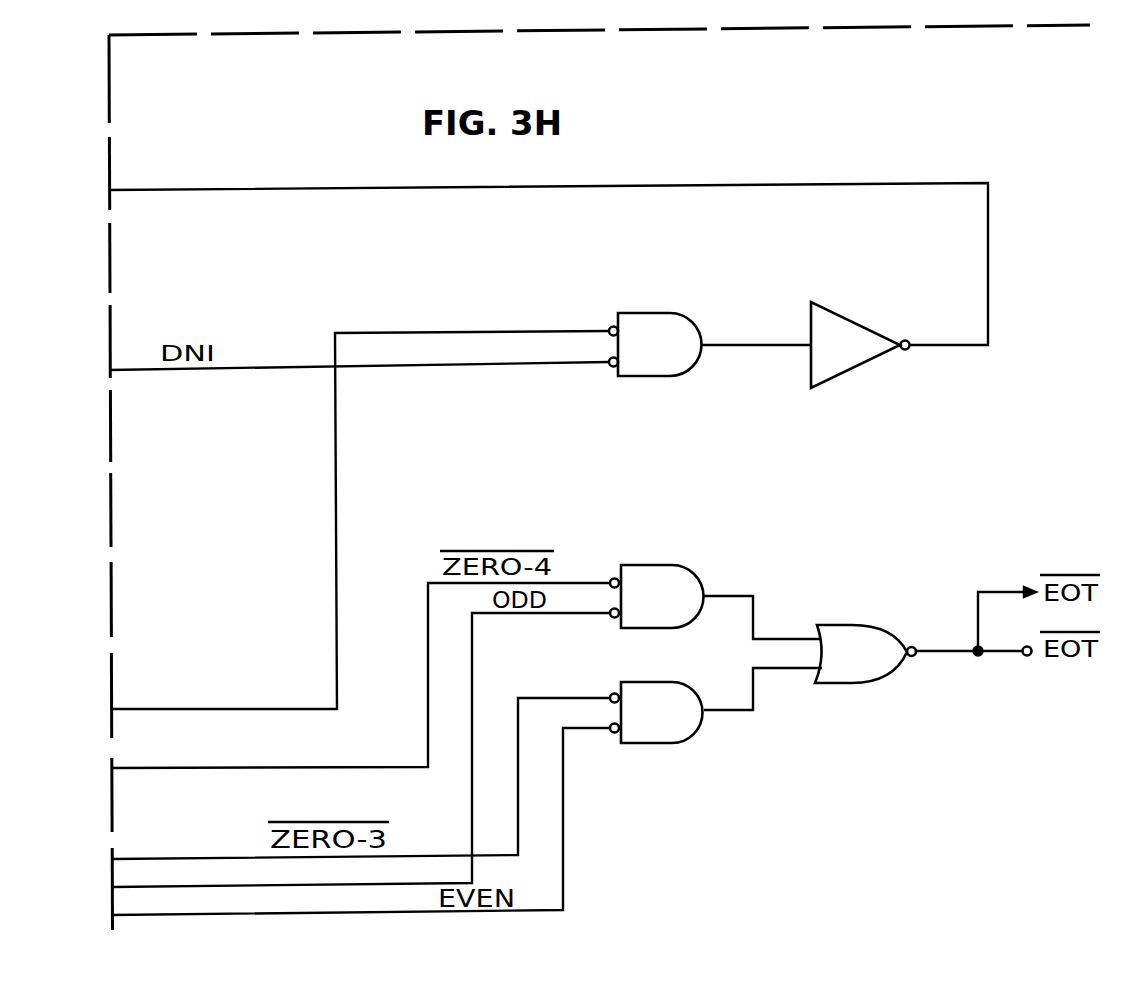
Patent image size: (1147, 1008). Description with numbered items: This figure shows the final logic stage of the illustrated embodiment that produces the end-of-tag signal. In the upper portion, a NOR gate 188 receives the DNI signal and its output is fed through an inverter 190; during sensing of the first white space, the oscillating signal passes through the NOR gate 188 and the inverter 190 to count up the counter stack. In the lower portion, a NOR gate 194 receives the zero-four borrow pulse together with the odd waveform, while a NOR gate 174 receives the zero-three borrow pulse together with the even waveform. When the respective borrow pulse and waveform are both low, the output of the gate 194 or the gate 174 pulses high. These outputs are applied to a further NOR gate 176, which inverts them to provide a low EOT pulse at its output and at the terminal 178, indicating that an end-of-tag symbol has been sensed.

The NOR gate 188 is at (668, 313).
The inverter 190 is at (838, 312).
The NOR gate 194 is at (650, 565).
The NOR gate 174 is at (672, 743).
The NOR gate 176 is at (873, 683).
The terminal 178 is at (1028, 658).